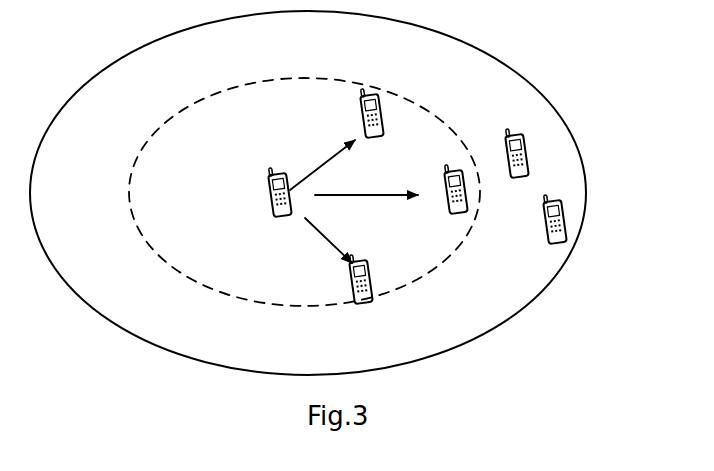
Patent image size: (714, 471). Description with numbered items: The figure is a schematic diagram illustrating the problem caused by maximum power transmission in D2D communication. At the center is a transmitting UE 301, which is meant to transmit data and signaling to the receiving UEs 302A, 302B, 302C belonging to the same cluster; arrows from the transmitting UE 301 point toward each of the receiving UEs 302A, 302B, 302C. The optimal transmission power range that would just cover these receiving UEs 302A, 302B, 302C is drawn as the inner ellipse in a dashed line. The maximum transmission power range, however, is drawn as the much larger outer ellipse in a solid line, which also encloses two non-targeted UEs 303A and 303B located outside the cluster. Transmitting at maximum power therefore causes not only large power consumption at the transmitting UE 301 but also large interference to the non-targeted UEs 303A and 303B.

The transmitting UE 301 is at (268, 214).
The receiving UE 302A is at (362, 114).
The receiving UE 302B is at (445, 182).
The receiving UE 302C is at (374, 278).
The non-targeted UE 303A is at (529, 163).
The non-targeted UE 303B is at (566, 223).